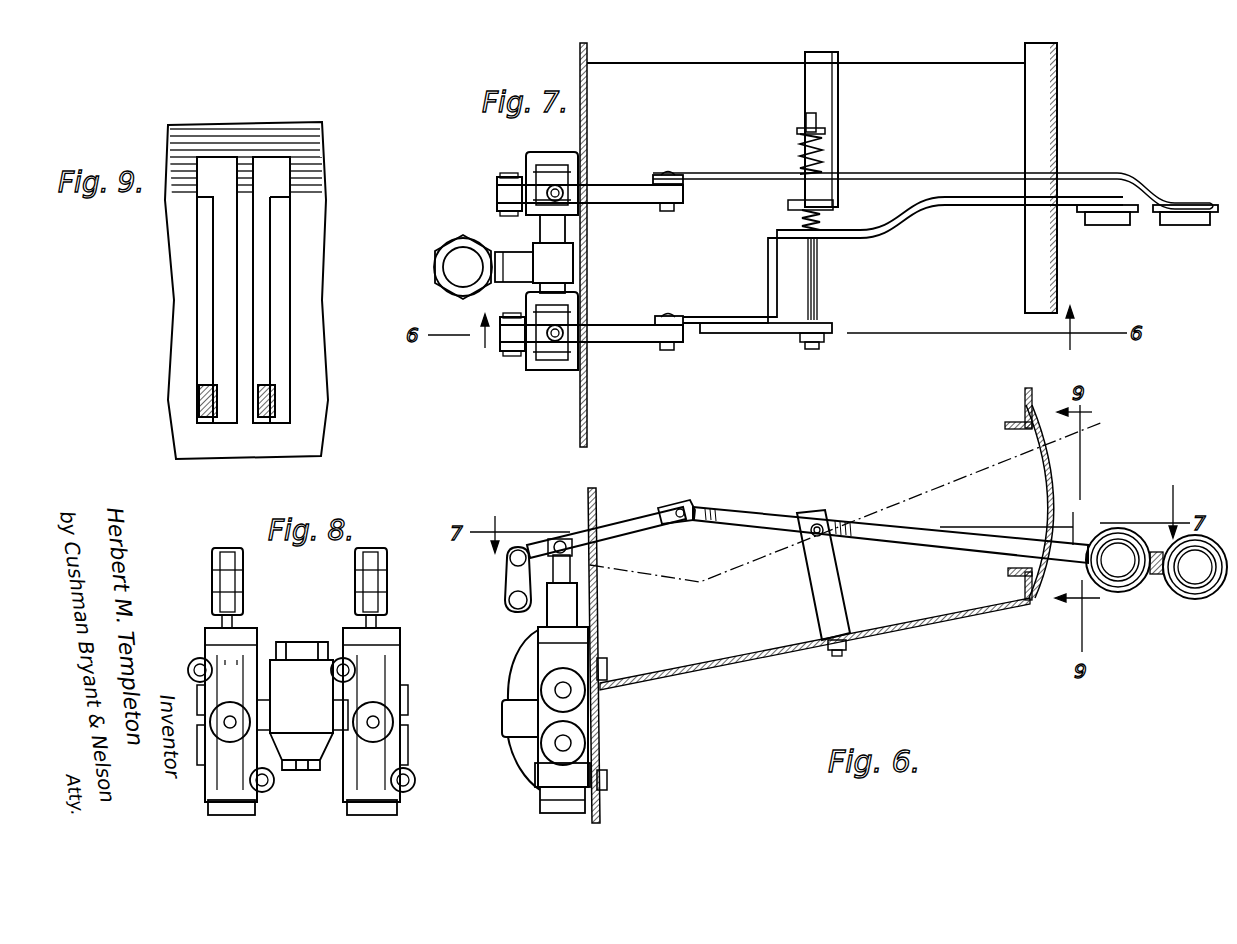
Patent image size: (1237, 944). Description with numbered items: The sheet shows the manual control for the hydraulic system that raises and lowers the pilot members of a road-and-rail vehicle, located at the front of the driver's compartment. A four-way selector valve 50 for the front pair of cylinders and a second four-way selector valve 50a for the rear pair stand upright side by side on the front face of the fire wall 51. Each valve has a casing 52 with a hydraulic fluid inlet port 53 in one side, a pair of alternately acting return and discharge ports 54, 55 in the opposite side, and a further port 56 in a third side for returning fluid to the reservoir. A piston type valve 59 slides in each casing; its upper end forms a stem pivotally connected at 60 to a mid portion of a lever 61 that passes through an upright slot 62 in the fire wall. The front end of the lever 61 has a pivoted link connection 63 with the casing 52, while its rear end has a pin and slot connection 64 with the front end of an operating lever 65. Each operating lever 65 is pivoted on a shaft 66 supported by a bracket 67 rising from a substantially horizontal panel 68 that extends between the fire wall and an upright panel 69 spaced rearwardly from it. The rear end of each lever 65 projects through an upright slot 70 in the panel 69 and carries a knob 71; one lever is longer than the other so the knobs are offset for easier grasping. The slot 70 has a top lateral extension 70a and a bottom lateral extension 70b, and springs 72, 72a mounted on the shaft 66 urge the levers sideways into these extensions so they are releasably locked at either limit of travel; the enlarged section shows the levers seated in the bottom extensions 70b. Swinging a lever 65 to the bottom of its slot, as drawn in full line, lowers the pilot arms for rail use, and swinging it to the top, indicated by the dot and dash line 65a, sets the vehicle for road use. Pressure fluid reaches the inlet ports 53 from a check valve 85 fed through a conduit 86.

In FIG. 7, the four-way selector valve 50 is at (522, 160).
In FIG. 8, the four-way selector valve 50 is at (206, 625).
In FIG. 7, the second four-way selector valve 50a is at (530, 370).
In FIG. 6, the second four-way selector valve 50a is at (531, 659).
In FIG. 8, the second four-way selector valve 50a is at (400, 626).
In FIG. 6, the fire wall 51 is at (600, 718).
In FIG. 8, the casing 52 is at (402, 648).
In FIG. 7, the hydraulic fluid inlet port 53 is at (556, 230).
In FIG. 8, the hydraulic fluid inlet port 53 is at (268, 740).
In FIG. 6, the return and discharge port 54 is at (563, 688).
In FIG. 8, the return and discharge port 54 is at (197, 695).
In FIG. 6, the return and discharge port 55 is at (568, 745).
In FIG. 8, the return and discharge port 55 is at (197, 747).
In FIG. 6, the port 56 is at (502, 718).
In FIG. 8, the port 56 is at (230, 728).
In FIG. 7, the piston type valve 59 is at (563, 190).
In FIG. 6, the piston type valve 59 is at (558, 578).
In FIG. 8, the piston type valve 59 is at (220, 600).
In FIG. 6, the pivotal connection 60 is at (562, 540).
In FIG. 7, the lever 61 is at (617, 203).
In FIG. 6, the lever 61 is at (612, 525).
In FIG. 8, the lever 61 is at (227, 556).
In FIG. 7, the upright slot 62 is at (585, 192).
In FIG. 6, the upright slot 62 is at (597, 557).
In FIG. 7, the pivoted link connection 63 is at (508, 178).
In FIG. 6, the pivoted link connection 63 is at (508, 560).
In FIG. 7, the pin and slot connection 64 is at (685, 160).
In FIG. 6, the pin and slot connection 64 is at (688, 500).
In FIG. 9, the operating lever 65 is at (207, 386).
In FIG. 7, the operating lever 65 is at (930, 180).
In FIG. 6, the operating lever 65 is at (918, 533).
In FIG. 6, the dot and dash line 65a is at (952, 480).
In FIG. 7, the shaft 66 is at (817, 268).
In FIG. 6, the shaft 66 is at (810, 535).
In FIG. 7, the bracket 67 is at (838, 147).
In FIG. 6, the bracket 67 is at (822, 592).
In FIG. 7, the horizontal panel 68 is at (900, 63).
In FIG. 6, the horizontal panel 68 is at (766, 655).
In FIG. 9, the upright panel 69 is at (182, 282).
In FIG. 7, the upright panel 69 is at (1057, 103).
In FIG. 6, the upright panel 69 is at (1040, 598).
In FIG. 9, the upright slot 70 is at (280, 311).
In FIG. 6, the upright slot 70 is at (1052, 480).
In FIG. 9, the top lateral extension 70a is at (200, 180).
In FIG. 9, the bottom lateral extension 70b is at (262, 425).
In FIG. 7, the knob 71 is at (1175, 227).
In FIG. 6, the knob 71 is at (1185, 598).
In FIG. 7, the spring 72 is at (798, 150).
In FIG. 7, the spring 72a is at (800, 220).
In FIG. 7, the check valve 85 is at (443, 251).
In FIG. 8, the check valve 85 is at (302, 706).
In FIG. 7, the conduit 86 is at (573, 262).